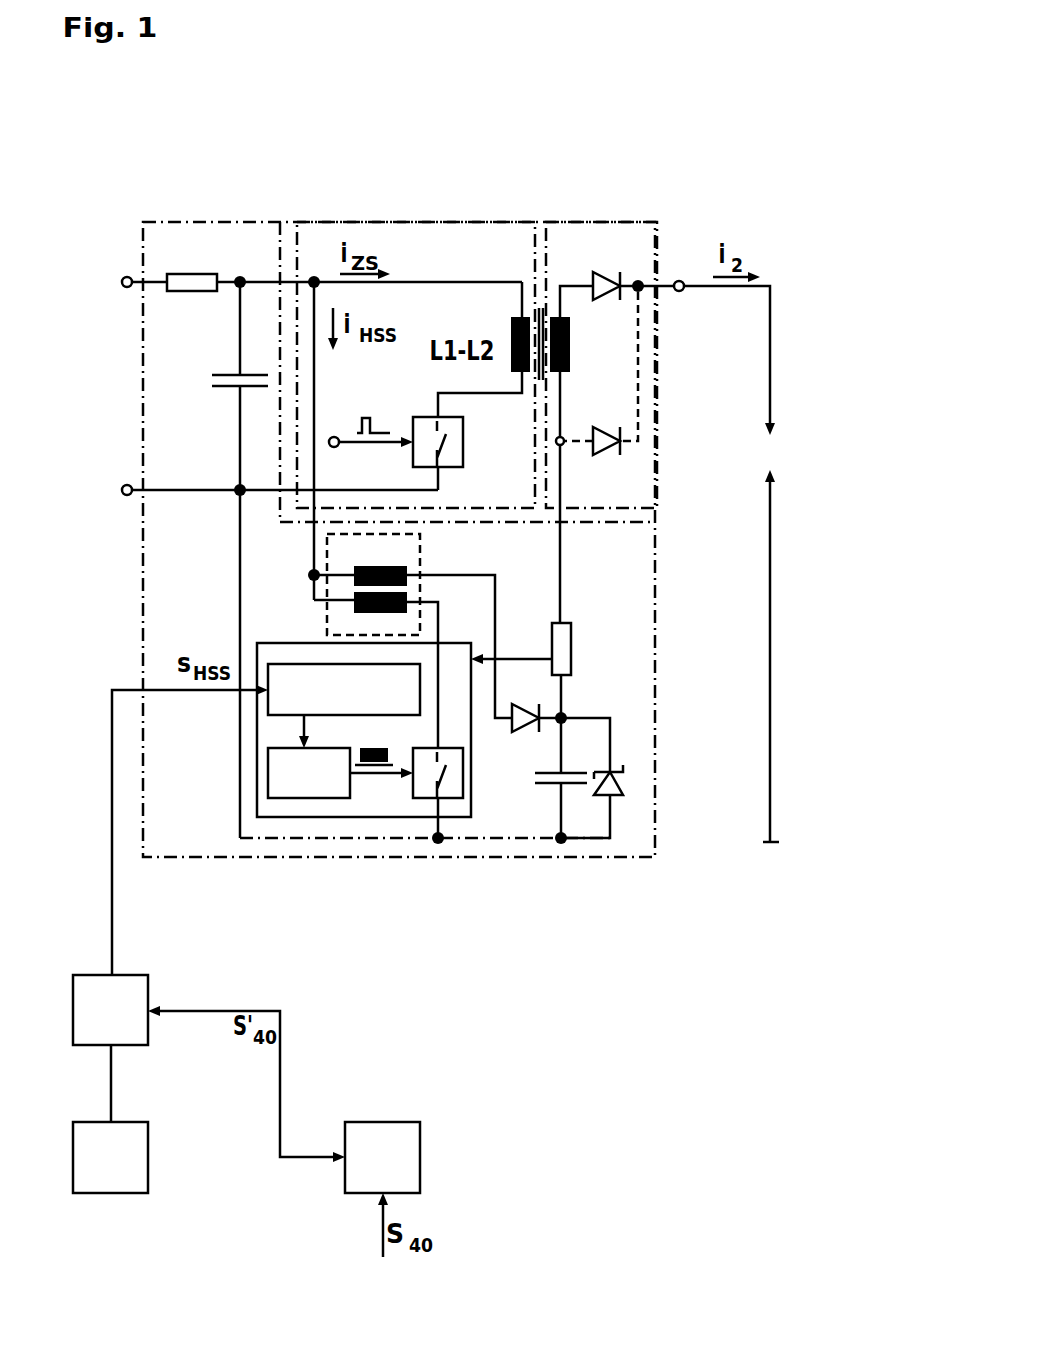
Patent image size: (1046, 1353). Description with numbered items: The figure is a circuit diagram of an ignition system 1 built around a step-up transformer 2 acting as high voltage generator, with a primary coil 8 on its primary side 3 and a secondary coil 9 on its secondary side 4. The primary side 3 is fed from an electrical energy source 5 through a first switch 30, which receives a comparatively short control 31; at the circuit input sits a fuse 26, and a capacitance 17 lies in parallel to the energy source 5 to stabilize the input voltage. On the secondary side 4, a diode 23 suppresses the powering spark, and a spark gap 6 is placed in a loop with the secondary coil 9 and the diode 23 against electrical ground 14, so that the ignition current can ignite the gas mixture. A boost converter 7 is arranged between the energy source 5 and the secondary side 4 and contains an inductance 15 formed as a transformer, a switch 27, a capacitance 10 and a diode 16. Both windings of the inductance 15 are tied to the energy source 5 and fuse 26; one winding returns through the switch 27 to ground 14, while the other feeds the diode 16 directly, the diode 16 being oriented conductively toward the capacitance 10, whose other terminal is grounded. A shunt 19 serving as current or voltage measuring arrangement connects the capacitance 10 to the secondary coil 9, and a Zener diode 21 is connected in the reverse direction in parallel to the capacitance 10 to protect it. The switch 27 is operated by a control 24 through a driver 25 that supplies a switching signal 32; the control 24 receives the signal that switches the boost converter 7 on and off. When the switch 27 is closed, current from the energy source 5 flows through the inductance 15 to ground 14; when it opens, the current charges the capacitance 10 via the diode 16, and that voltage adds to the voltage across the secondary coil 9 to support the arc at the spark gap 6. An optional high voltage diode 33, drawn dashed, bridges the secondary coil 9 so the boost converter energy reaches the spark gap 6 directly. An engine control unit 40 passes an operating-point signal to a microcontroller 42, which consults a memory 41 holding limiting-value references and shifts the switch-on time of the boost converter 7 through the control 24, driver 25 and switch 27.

The ignition system 1 is at (757, 200).
The step-up transformer 2 is at (528, 252).
The primary side 3 is at (400, 215).
The secondary side 4 is at (634, 222).
The electrical energy source 5 is at (130, 282).
The spark gap 6 is at (770, 452).
The boost converter 7 is at (143, 598).
The primary coil 8 is at (511, 325).
The secondary coil 9 is at (570, 345).
The capacitance 10 is at (570, 785).
The electrical ground 14 is at (765, 880).
The inductance 15 is at (337, 515).
The diode 16 is at (522, 732).
The capacitance 17 is at (228, 373).
The shunt 19 is at (571, 660).
The Zener diode 21 is at (623, 785).
The diode 23 is at (607, 280).
The control 24 is at (277, 703).
The driver 25 is at (277, 778).
The fuse 26 is at (190, 276).
The switch 27 is at (418, 792).
The first switch 30 is at (463, 442).
The control of the first switch 31 is at (358, 432).
The switching signal 32 is at (377, 766).
The high voltage diode 33 is at (600, 448).
The engine control unit 40 is at (408, 1162).
The memory 41 is at (135, 1162).
The microcontroller 42 is at (135, 983).